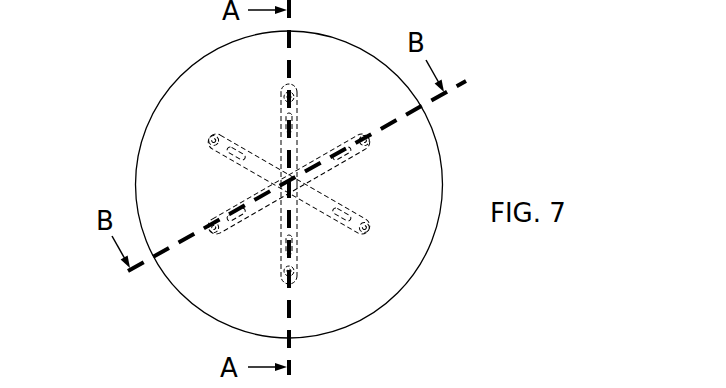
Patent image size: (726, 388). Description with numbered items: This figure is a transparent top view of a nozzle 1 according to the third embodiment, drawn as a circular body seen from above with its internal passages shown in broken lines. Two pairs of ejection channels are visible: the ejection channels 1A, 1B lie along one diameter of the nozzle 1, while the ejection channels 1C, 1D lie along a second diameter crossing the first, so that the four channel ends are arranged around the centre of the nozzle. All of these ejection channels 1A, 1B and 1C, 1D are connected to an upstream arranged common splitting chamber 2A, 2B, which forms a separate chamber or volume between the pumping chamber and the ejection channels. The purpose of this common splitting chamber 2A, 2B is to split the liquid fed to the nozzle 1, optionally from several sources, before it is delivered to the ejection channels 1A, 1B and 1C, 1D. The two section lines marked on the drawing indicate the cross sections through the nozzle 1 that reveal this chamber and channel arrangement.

The nozzle 1 is at (110, 118).
The ejection channel 1A is at (294, 279).
The ejection channel 1B is at (292, 90).
The ejection channel 1C is at (208, 230).
The ejection channel 1D is at (368, 140).
The common splitting chamber 2A is at (296, 248).
The common splitting chamber 2B is at (283, 133).